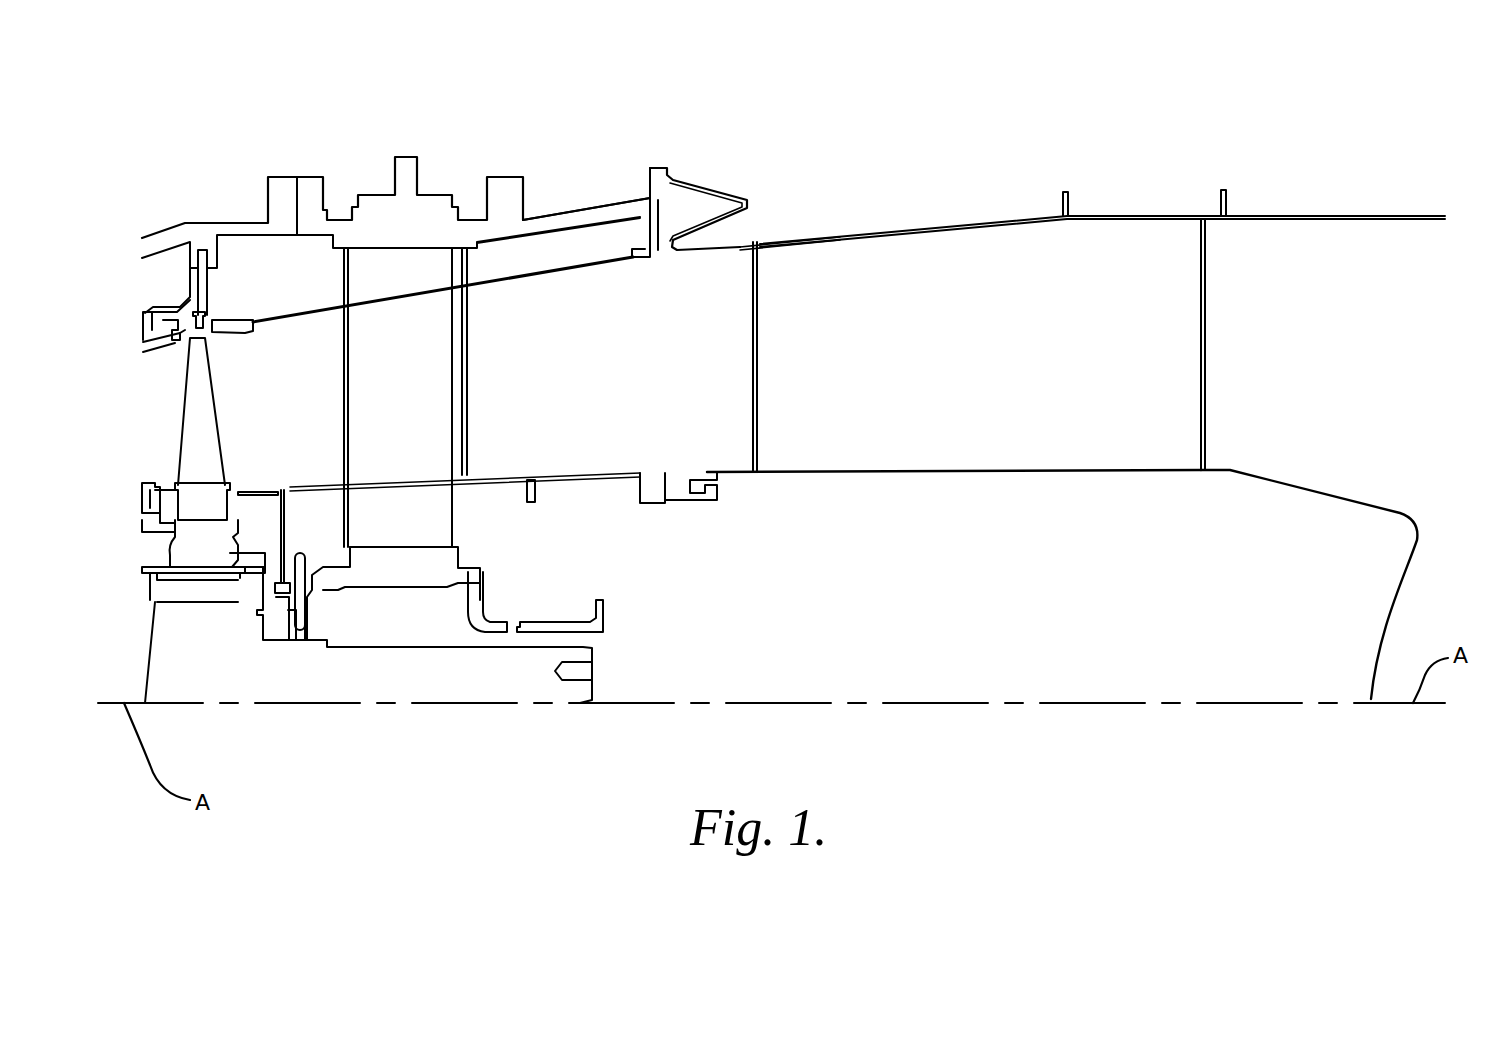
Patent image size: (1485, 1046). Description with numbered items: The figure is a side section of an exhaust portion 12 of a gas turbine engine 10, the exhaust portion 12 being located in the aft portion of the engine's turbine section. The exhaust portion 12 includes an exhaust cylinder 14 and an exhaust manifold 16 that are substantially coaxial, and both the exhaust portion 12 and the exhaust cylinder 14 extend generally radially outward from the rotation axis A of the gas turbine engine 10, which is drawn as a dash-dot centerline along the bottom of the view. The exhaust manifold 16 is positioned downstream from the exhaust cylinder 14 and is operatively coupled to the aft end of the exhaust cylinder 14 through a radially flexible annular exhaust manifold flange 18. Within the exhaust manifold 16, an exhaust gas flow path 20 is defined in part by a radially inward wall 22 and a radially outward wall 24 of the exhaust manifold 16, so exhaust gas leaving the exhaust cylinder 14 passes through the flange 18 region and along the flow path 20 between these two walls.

The gas turbine engine 10 is at (283, 139).
The exhaust portion 12 is at (504, 177).
The exhaust cylinder 14 is at (580, 188).
The exhaust manifold 16 is at (937, 223).
The radially flexible annular exhaust manifold flange 18 is at (707, 191).
The exhaust gas flow path 20 is at (1147, 295).
The radially inward wall 22 is at (947, 474).
The radially outward wall 24 is at (823, 237).